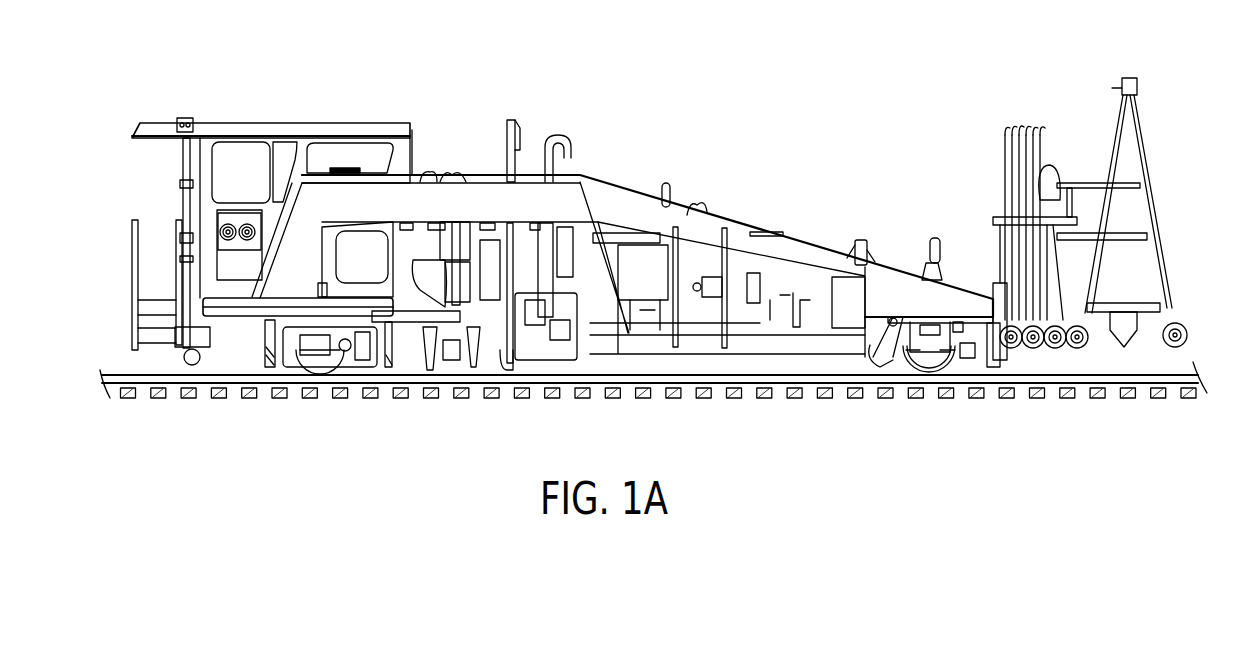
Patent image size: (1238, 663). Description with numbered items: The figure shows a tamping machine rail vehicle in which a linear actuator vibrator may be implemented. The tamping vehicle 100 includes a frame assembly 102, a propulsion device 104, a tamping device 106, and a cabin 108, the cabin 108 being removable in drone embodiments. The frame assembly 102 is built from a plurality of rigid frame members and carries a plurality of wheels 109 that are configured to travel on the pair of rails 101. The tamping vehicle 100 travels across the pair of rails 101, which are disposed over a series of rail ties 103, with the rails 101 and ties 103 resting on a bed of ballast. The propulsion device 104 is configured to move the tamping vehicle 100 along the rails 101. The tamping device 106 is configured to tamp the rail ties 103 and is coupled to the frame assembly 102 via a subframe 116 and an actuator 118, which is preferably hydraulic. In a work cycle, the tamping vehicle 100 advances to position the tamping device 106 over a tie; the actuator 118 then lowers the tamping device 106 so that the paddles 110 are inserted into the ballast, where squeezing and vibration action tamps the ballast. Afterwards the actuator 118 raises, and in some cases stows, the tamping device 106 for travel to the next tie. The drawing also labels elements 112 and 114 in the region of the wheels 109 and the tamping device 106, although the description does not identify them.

The tamping vehicle 100 is at (272, 92).
The rails 101 is at (142, 380).
The frame assembly 102 is at (597, 200).
The rail ties 103 is at (222, 383).
The propulsion device 104 is at (737, 262).
The tamping device 106 is at (488, 270).
The cabin 108 is at (303, 147).
The wheels 109 is at (973, 378).
The paddles 110 is at (435, 367).
The rear wheel truck 112 is at (897, 362).
The hydraulic cylinder 114 is at (488, 290).
The subframe 116 is at (450, 290).
The actuator 118 is at (452, 265).